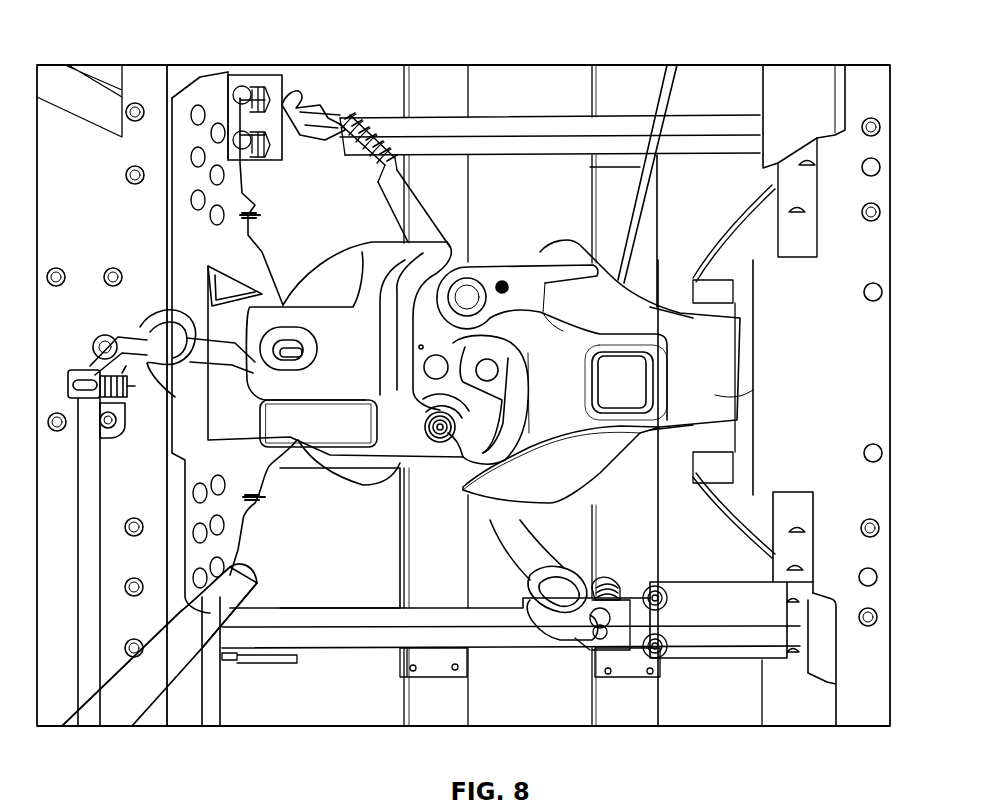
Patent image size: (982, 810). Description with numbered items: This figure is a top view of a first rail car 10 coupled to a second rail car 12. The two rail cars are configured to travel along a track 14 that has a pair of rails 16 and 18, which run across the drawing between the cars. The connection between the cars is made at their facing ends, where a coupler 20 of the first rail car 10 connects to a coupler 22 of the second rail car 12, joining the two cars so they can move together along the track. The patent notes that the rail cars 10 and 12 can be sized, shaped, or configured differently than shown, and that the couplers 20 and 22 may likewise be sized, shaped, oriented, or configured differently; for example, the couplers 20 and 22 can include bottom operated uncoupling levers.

The first rail car 10 is at (150, 65).
The second rail car 12 is at (855, 65).
The track 14 is at (497, 103).
The rail 16 is at (536, 110).
The rail 18 is at (490, 640).
The coupler 20 is at (325, 97).
The coupler 22 is at (577, 262).